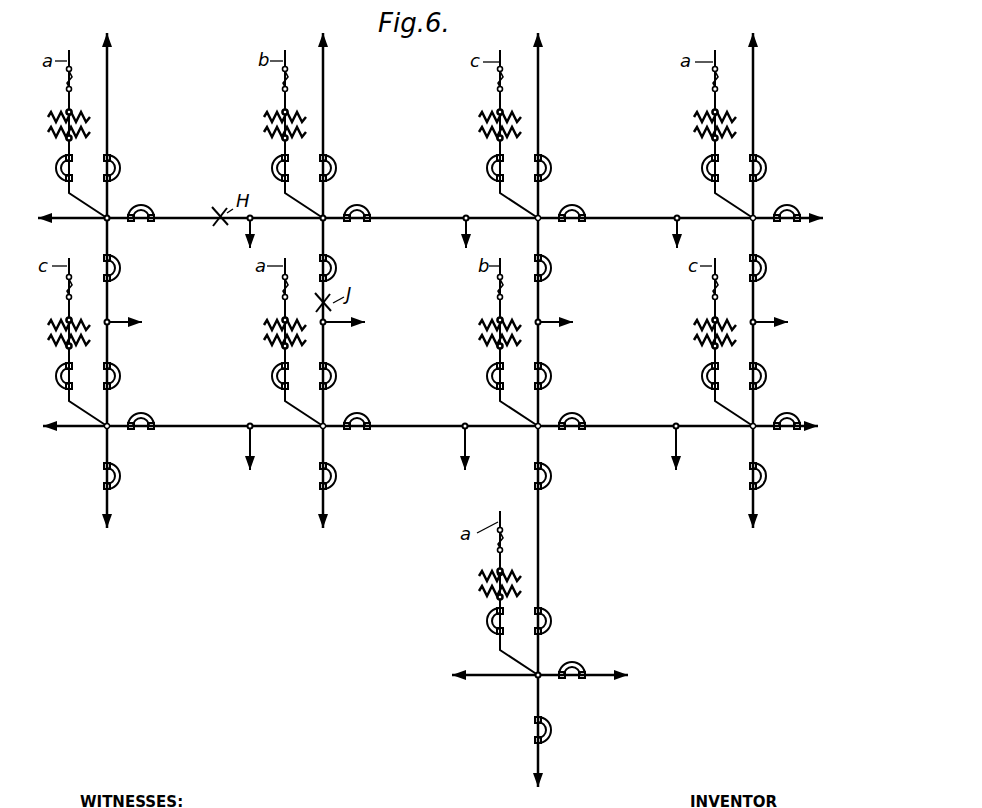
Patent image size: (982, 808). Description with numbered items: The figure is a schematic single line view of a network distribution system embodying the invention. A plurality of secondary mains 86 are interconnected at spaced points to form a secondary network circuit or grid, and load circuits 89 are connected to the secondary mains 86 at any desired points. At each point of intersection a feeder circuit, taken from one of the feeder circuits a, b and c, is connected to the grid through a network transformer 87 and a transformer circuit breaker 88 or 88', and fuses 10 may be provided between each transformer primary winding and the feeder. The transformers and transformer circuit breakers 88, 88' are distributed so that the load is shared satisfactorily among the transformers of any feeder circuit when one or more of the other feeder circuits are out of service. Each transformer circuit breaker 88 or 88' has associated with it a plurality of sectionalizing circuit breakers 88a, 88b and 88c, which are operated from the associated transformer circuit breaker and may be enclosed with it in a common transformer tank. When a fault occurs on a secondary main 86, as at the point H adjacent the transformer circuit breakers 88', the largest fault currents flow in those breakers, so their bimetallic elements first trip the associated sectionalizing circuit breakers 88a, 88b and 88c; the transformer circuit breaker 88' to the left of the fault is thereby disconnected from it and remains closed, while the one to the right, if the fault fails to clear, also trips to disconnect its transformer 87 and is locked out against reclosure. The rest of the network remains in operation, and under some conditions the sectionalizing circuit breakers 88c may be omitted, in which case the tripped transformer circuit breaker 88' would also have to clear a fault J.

The fuse 10 is at (77, 79).
The secondary main 86 is at (326, 117).
The network transformer 87 is at (92, 120).
The transformer circuit breaker 88 is at (471, 621).
The transformer circuit breaker 88' is at (161, 179).
The sectionalizing circuit breaker 88a is at (121, 178).
The sectionalizing circuit breaker 88b is at (144, 205).
The sectionalizing circuit breaker 88c is at (122, 270).
The load circuit 89 is at (249, 251).